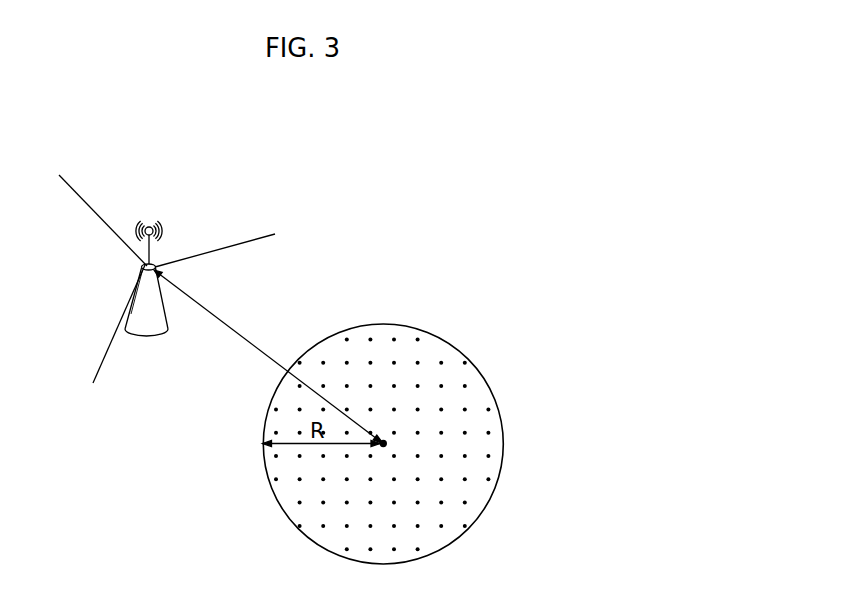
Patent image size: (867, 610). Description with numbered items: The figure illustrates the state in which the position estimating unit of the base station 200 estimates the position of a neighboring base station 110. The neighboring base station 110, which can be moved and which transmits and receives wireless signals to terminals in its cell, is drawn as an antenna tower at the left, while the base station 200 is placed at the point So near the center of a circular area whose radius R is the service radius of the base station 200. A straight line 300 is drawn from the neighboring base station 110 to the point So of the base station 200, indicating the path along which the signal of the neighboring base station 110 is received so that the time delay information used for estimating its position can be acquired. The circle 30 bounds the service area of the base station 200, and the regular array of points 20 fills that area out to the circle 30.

The base station 110 is at (148, 335).
The base station 200 is at (383, 443).
The line between base station and terminal 300 is at (285, 370).
The circular area boundary 30 is at (482, 370).
The grid points 20 is at (475, 443).